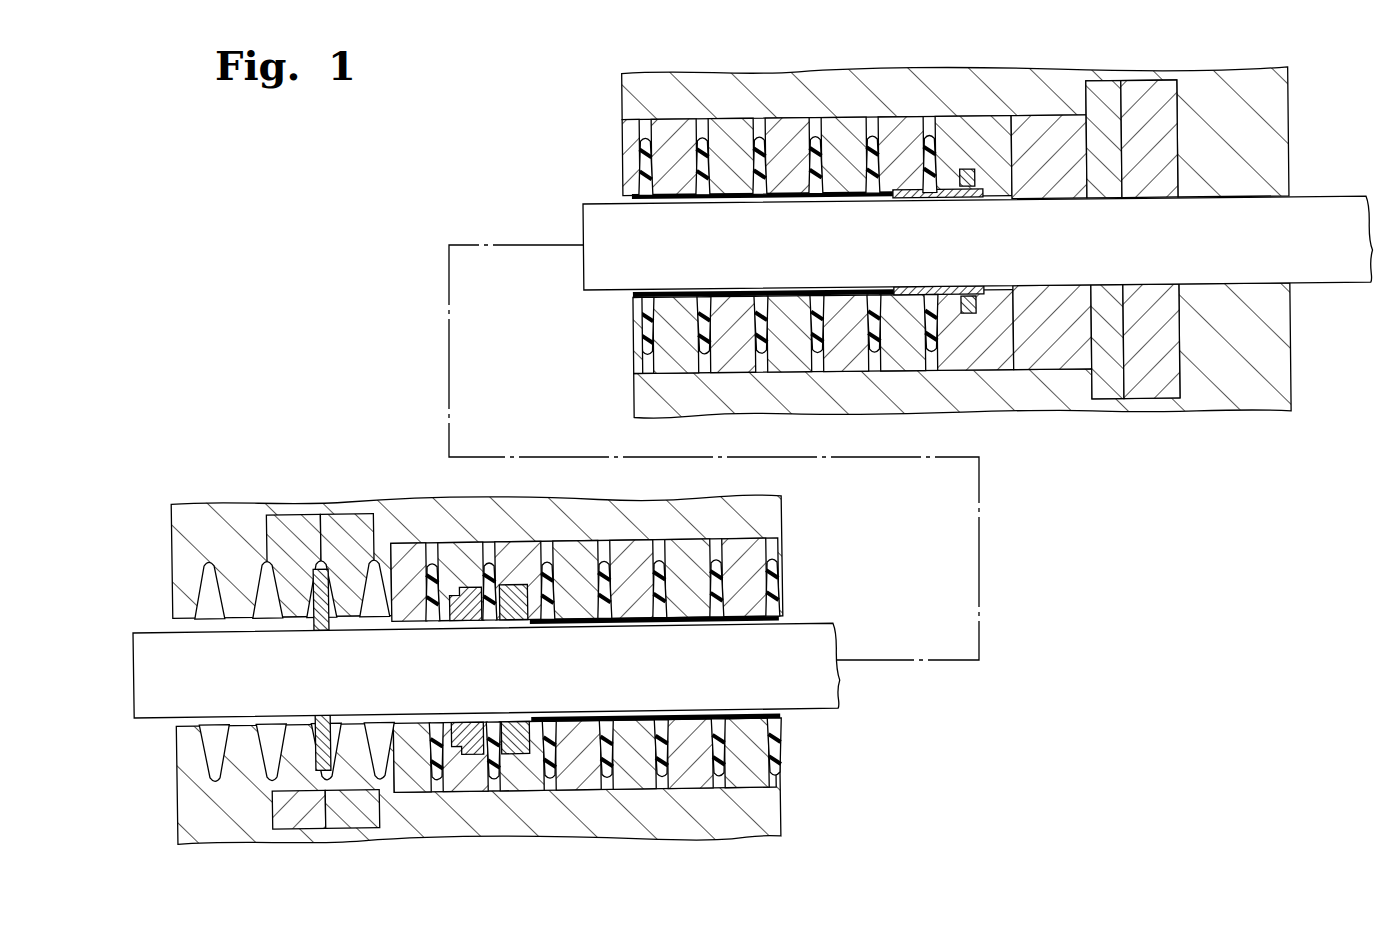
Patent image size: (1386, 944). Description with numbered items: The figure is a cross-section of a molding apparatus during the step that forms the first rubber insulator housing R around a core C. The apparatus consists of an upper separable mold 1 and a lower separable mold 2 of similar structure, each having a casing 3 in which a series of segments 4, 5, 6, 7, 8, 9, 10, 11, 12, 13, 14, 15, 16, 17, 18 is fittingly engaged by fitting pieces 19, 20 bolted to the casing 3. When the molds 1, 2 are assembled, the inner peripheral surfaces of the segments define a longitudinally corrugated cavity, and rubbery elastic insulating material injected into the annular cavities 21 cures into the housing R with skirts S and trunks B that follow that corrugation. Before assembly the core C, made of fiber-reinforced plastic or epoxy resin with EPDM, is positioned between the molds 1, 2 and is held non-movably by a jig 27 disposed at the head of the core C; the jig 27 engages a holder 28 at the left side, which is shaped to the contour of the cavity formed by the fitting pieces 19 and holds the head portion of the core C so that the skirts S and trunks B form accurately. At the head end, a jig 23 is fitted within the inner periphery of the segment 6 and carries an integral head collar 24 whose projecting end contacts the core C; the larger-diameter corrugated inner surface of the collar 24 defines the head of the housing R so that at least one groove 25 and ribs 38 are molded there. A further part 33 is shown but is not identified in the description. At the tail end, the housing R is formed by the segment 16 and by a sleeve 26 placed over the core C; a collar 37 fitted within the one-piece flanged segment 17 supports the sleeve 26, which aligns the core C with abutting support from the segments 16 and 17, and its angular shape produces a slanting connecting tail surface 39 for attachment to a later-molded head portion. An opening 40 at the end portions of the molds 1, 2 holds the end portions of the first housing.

The upper separable mold 1 is at (1344, 140).
The lower separable mold 2 is at (1344, 380).
The casing 3 is at (1044, 416).
The segment 4 is at (420, 800).
The segment 5 is at (466, 800).
The segment 6 is at (520, 800).
The segment 7 is at (580, 800).
The segment 8 is at (630, 800).
The segment 9 is at (690, 800).
The segment 10 is at (745, 800).
The segment 11 is at (634, 126).
The segment 12 is at (675, 126).
The segment 13 is at (726, 128).
The segment 14 is at (786, 128).
The segment 15 is at (840, 128).
The segment 16 is at (908, 130).
The segment 17 is at (972, 125).
The segment 18 is at (1056, 122).
The fitting piece 19 is at (345, 834).
The fitting piece 20 is at (1150, 90).
The annular cavity 21 is at (664, 300).
The jig for forming a head portion 23 is at (522, 598).
The head collar 24 is at (506, 628).
The groove 25 is at (536, 630).
The sleeve 26 is at (940, 204).
The jig for preventing the core from moving 27 is at (322, 634).
The holder 28 is at (270, 622).
The sealing ring 33 is at (466, 627).
The collar 37 is at (972, 190).
The ribs 38 is at (520, 628).
The slanting connecting tail surface 39 is at (905, 204).
The opening 40 is at (176, 722).
The insulator housing R is at (640, 152).
The core C is at (598, 203).
The trunks B is at (632, 302).
The skirts S is at (640, 336).